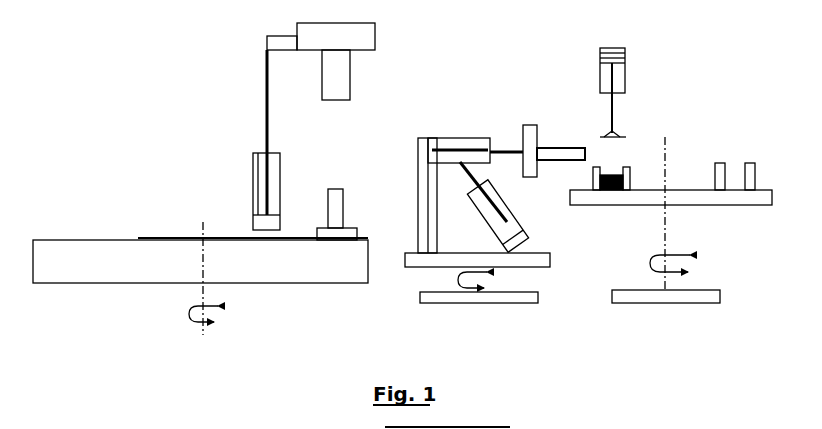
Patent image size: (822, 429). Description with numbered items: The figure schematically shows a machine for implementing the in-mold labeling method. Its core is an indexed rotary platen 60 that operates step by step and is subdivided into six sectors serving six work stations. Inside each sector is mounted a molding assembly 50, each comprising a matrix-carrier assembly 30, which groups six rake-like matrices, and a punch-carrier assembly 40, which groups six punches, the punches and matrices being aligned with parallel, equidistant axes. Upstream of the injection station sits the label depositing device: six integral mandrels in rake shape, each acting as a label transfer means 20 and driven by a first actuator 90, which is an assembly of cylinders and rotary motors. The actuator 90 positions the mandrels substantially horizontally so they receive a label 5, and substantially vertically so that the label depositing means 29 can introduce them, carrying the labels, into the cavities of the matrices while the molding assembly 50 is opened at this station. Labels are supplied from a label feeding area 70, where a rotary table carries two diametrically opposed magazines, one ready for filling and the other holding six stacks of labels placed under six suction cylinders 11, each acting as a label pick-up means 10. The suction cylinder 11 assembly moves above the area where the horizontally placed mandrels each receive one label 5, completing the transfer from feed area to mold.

The label pick-up means 10 is at (628, 97).
The suction cylinder 11 is at (614, 129).
The label 5 is at (626, 137).
The label transfer means 20 is at (486, 122).
The label depositing means 29 is at (568, 152).
The matrix-carrier assembly 30 is at (343, 76).
The punch-carrier assembly 40 is at (343, 212).
The molding assembly 50 is at (396, 174).
The rotary platen 60 is at (230, 252).
The label feeding area 70 is at (703, 133).
The first actuator 90 is at (500, 230).